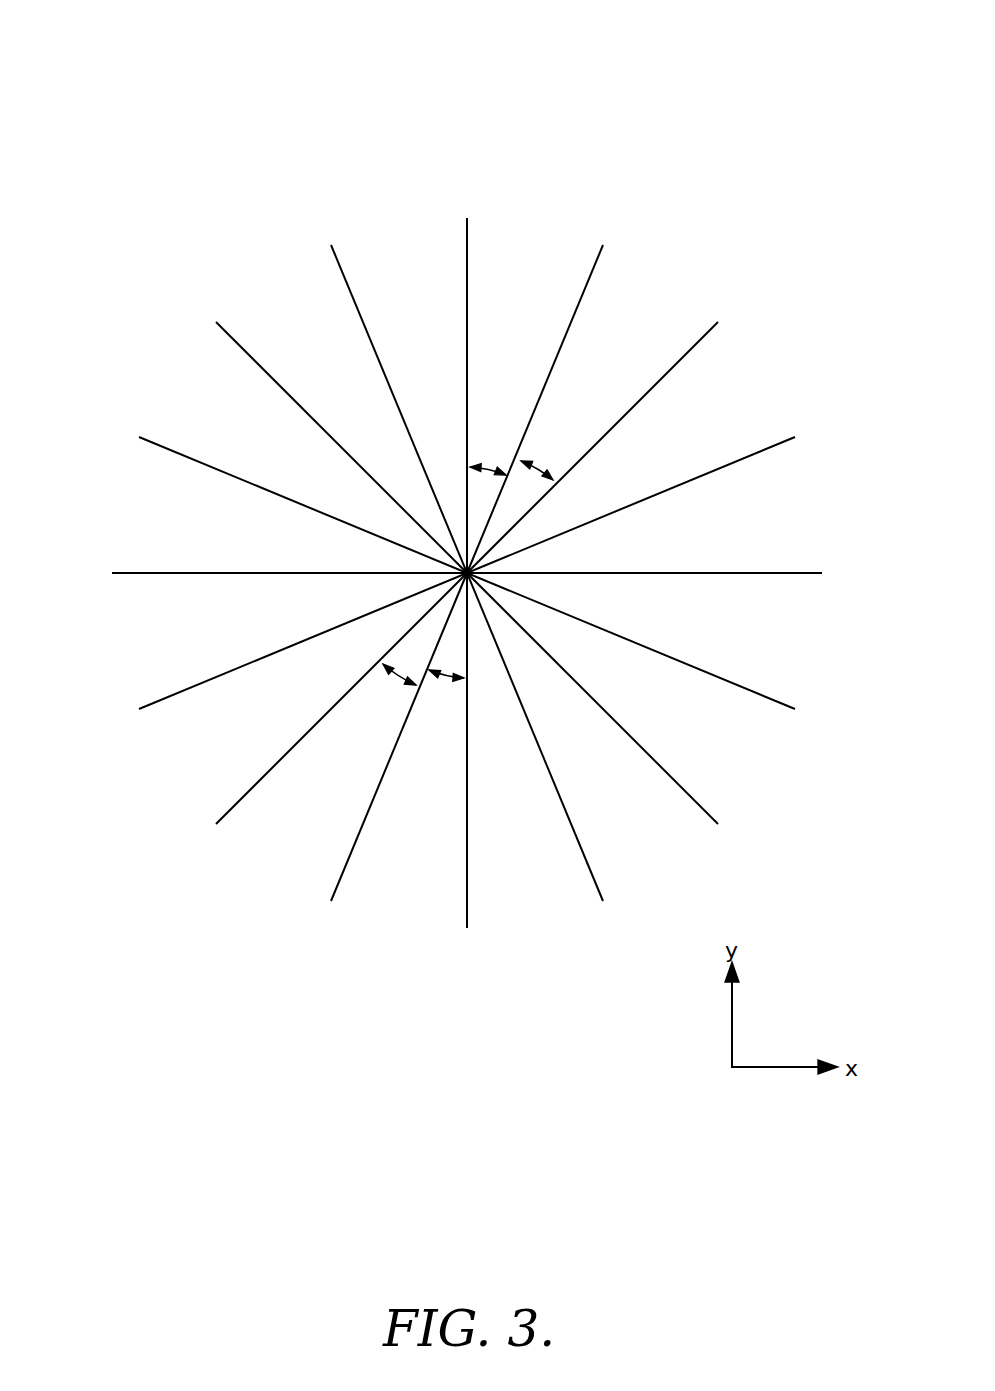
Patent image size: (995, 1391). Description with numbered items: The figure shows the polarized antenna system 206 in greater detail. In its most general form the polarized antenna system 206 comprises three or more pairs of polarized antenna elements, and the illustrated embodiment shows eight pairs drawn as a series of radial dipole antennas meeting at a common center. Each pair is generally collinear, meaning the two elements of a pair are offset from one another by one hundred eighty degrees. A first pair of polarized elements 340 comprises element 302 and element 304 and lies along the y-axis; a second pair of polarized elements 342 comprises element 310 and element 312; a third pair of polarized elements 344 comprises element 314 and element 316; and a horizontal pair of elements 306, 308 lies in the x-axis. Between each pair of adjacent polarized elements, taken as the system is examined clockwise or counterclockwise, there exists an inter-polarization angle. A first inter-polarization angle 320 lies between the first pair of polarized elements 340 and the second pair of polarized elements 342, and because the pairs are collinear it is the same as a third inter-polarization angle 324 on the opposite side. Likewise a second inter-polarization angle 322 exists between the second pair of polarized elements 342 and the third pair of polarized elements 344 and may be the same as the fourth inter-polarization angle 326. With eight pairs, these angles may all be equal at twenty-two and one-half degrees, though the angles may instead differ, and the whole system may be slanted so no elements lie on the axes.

The polarized antenna system 206 is at (90, 77).
The element 302 is at (468, 293).
The element 304 is at (467, 853).
The horizontal element 306 is at (742, 573).
The horizontal element 308 is at (193, 572).
The element 310 is at (568, 329).
The element 312 is at (365, 812).
The element 314 is at (667, 373).
The element 316 is at (267, 772).
The first inter-polarization angle 320 is at (491, 465).
The second inter-polarization angle 322 is at (538, 467).
The third inter-polarization angle 324 is at (437, 679).
The fourth inter-polarization angle 326 is at (395, 678).
The first pair of polarized elements 340 is at (459, 208).
The second pair of polarized elements 342 is at (607, 245).
The third pair of polarized elements 344 is at (733, 293).